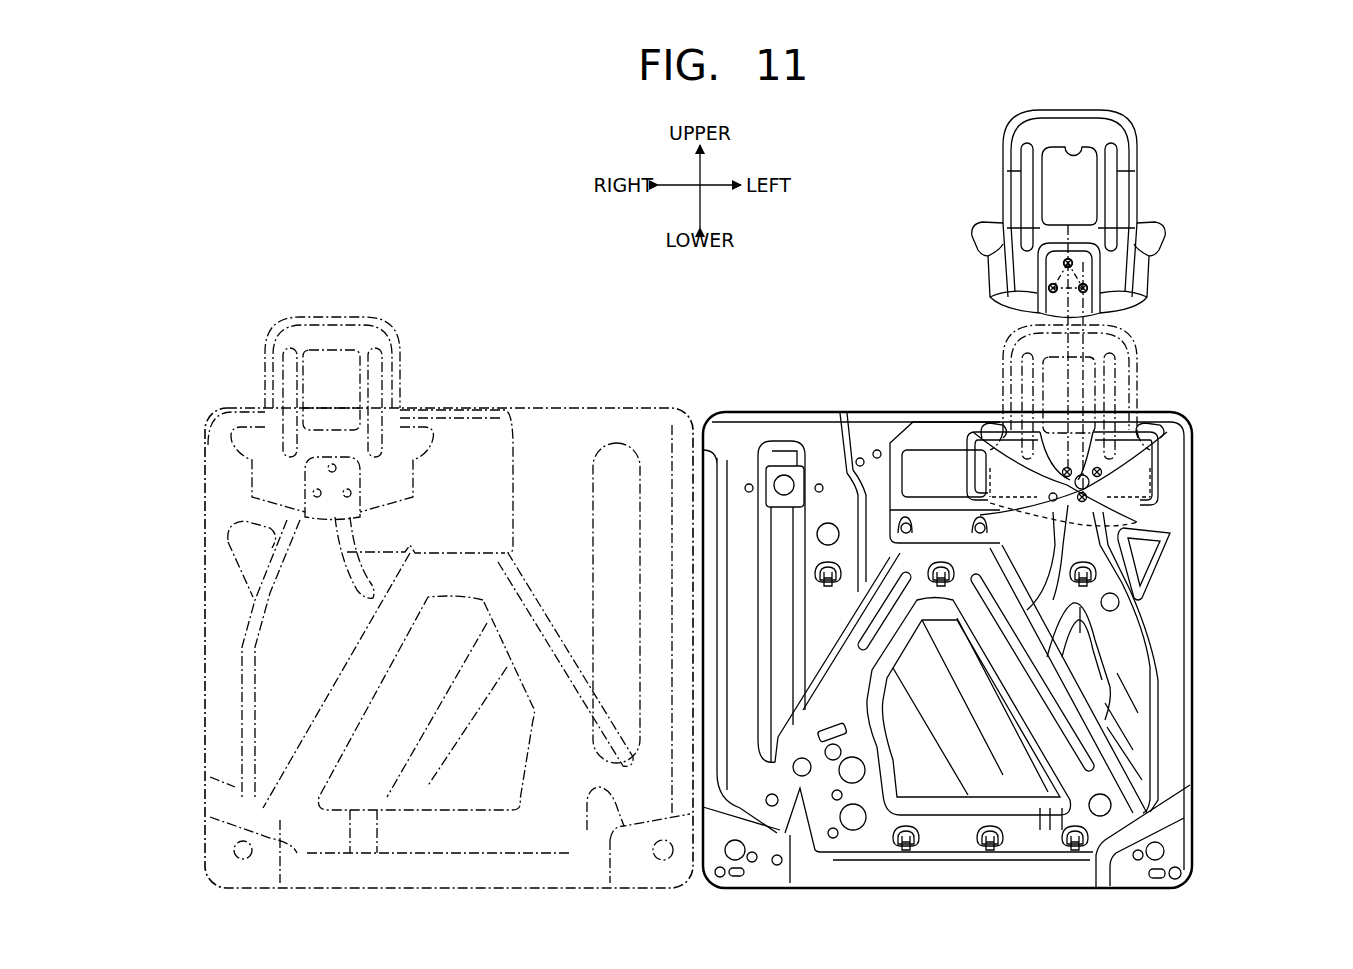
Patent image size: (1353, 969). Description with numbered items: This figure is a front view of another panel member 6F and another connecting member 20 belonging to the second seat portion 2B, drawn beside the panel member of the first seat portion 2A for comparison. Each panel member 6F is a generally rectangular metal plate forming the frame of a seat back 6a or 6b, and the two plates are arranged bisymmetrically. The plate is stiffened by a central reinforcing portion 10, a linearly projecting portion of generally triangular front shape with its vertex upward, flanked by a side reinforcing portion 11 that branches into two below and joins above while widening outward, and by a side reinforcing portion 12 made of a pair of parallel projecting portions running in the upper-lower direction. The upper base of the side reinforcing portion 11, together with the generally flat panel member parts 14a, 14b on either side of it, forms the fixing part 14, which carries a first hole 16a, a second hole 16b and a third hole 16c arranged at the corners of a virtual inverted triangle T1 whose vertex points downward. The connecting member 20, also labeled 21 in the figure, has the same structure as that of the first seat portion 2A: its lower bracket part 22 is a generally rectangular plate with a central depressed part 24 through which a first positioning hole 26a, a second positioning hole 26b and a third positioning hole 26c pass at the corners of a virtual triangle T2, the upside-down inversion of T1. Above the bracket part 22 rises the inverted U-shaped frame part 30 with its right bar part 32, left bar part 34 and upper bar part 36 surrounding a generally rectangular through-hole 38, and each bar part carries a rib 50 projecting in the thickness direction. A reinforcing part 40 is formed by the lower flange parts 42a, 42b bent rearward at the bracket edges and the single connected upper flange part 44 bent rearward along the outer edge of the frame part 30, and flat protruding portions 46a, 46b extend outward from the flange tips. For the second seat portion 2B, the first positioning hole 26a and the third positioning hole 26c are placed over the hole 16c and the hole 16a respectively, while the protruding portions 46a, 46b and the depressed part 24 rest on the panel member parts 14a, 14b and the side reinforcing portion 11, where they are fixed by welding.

The first seat portion 2A is at (215, 330).
The second seat portion 2B is at (822, 340).
The panel member 6F is at (991, 650).
The seat back 6a is at (527, 410).
The seat back 6b is at (1190, 415).
The central reinforcing portion 10 is at (858, 678).
The side reinforcing portion 11 is at (1085, 542).
The side reinforcing portion 12 is at (780, 563).
The fixing part 14 is at (1148, 425).
The panel member part 14a is at (1013, 482).
The panel member part 14b is at (1128, 482).
The first hole 16a is at (1107, 512).
The second hole 16b is at (1150, 452).
The third hole 16c is at (983, 432).
The connecting member 20 is at (412, 333).
The bracket 21 is at (1150, 140).
The bracket part 22 is at (1140, 270).
The depressed part 24 is at (1090, 303).
The first positioning hole 26a is at (1064, 262).
The second positioning hole 26b is at (1049, 287).
The third positioning hole 26c is at (1080, 291).
The frame part 30 is at (1073, 149).
The right bar part 32 is at (1003, 160).
The left bar part 34 is at (1140, 172).
The upper bar part 36 is at (1057, 107).
The through-hole 38 is at (1078, 150).
The reinforcing part 40 is at (1125, 250).
The lower flange part 42a is at (1010, 292).
The lower flange part 42b is at (1130, 291).
The upper flange part 44 is at (1130, 127).
The protruding portion 46a is at (975, 228).
The protruding portion 46b is at (1165, 228).
The rib 50 is at (1027, 188).
The virtual inverted triangle T1 is at (1052, 512).
The virtual triangle T2 is at (1077, 258).